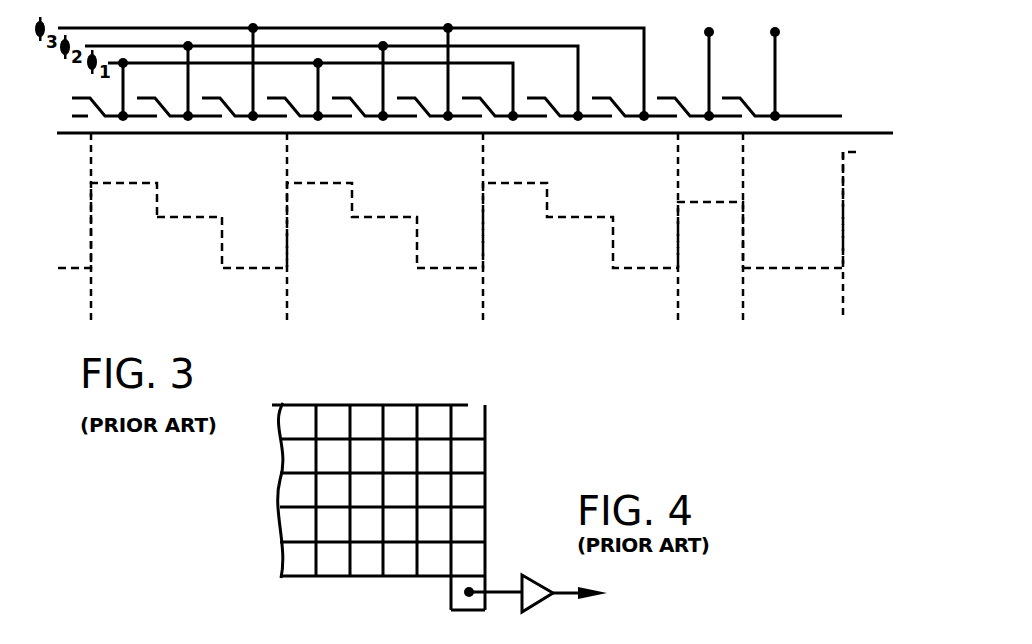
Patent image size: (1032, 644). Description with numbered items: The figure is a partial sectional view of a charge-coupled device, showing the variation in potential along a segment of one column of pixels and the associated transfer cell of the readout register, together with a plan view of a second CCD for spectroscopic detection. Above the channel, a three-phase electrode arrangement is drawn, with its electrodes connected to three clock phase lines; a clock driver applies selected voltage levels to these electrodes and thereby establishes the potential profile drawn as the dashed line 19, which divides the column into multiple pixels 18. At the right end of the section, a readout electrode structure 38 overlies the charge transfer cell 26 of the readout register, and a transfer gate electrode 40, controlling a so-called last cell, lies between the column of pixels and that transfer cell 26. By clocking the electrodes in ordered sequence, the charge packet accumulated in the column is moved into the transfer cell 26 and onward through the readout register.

The pixel 18 is at (195, 303).
The potential profile 19 is at (177, 217).
The charge transfer cell 26 is at (803, 313).
The readout electrode structure 38 is at (835, 50).
The transfer gate electrode 40 is at (731, 118).